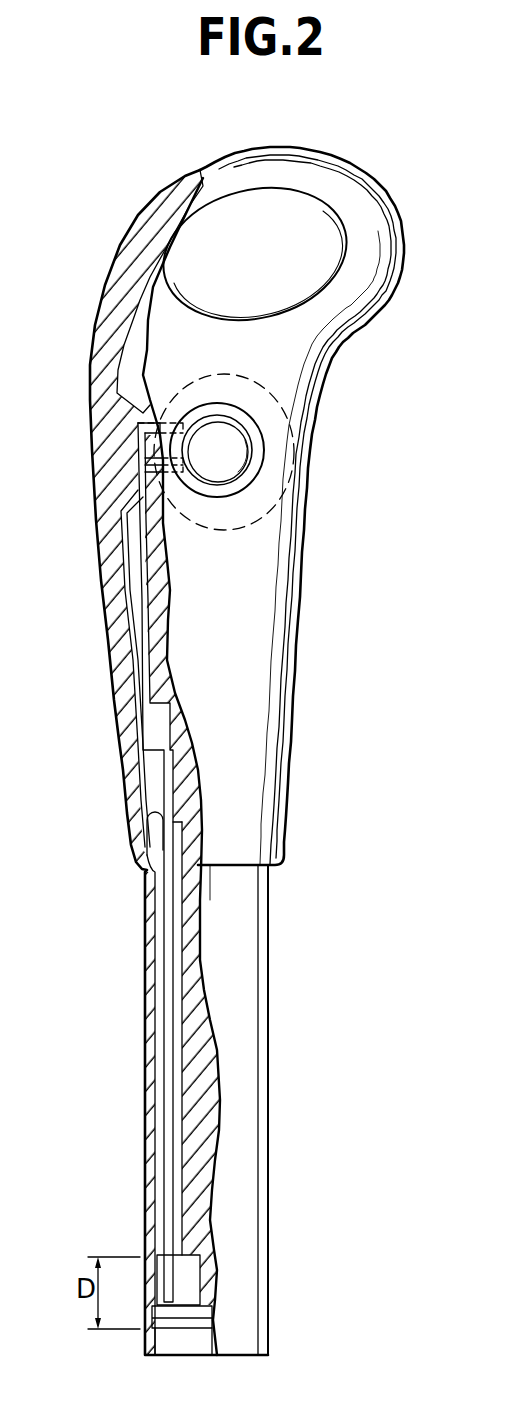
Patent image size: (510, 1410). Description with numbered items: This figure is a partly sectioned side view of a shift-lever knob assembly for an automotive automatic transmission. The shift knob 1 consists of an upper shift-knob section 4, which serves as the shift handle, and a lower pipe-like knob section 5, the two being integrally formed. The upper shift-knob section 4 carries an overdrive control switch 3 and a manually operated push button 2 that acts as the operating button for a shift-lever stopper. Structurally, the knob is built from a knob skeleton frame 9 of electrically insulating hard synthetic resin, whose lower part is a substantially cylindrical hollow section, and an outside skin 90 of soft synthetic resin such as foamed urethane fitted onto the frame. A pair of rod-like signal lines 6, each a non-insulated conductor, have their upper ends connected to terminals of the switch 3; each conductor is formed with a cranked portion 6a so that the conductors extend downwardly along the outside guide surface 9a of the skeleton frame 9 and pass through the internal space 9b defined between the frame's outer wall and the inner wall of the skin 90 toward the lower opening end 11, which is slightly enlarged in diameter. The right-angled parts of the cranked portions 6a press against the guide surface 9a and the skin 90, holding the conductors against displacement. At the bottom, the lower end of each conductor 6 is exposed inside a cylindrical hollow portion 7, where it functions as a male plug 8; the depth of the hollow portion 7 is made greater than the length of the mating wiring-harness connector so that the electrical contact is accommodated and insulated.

The shift knob 1 is at (404, 181).
The push button 2 is at (323, 227).
The overdrive control switch 3 is at (236, 440).
The upper shift-knob section 4 is at (264, 593).
The pipe-like knob section 5 is at (240, 1005).
The rod-like signal line 6 is at (172, 988).
The cranked portion 6a is at (152, 755).
The cylindrical hollow portion 7 is at (195, 1267).
The male plug 8 is at (186, 1296).
The knob skeleton frame 9 is at (200, 1103).
The outside guide surface 9a is at (160, 808).
The internal space 9b is at (163, 907).
The outside skin 90 is at (127, 753).
The lower opening end 11 is at (175, 1343).